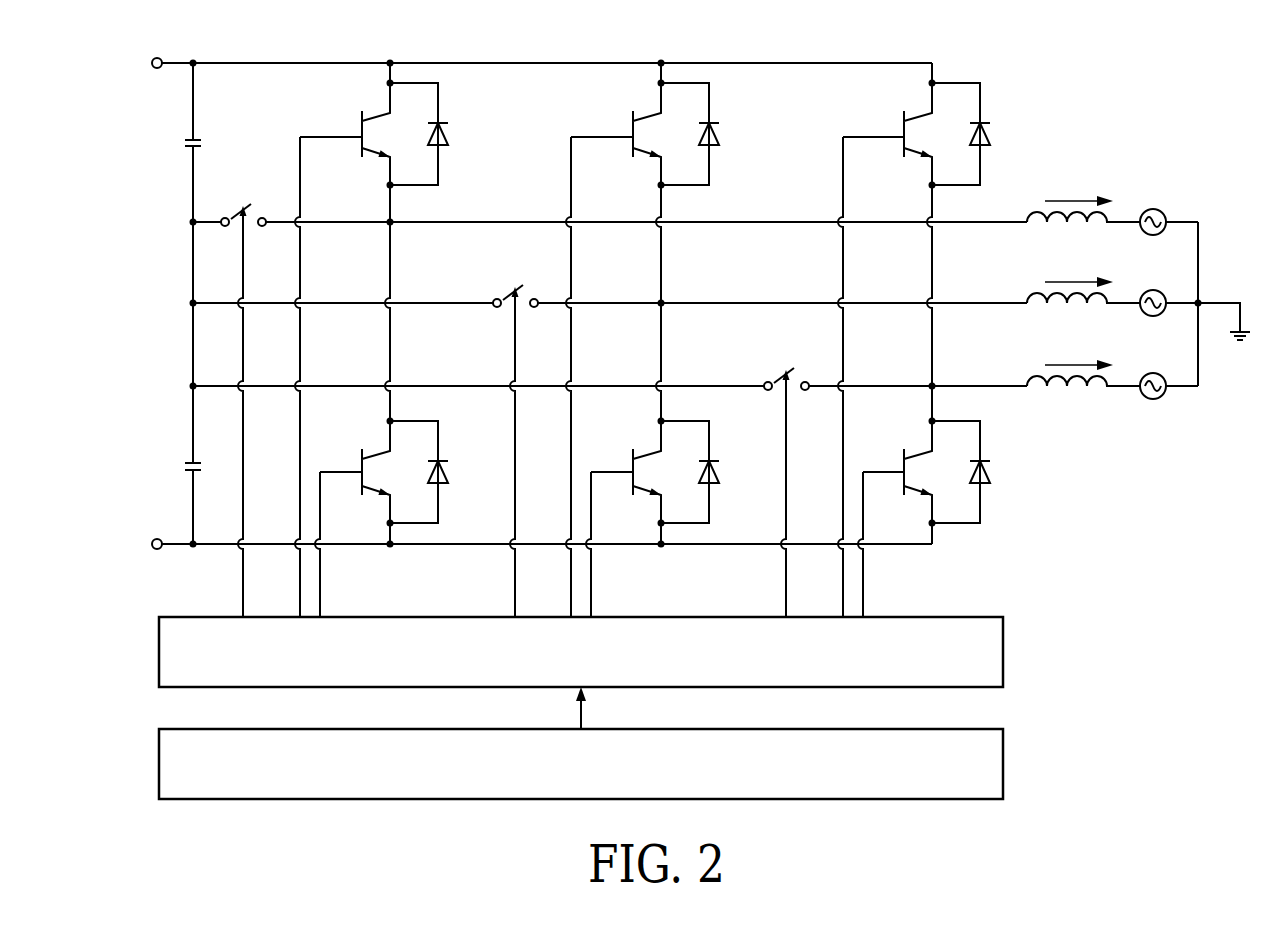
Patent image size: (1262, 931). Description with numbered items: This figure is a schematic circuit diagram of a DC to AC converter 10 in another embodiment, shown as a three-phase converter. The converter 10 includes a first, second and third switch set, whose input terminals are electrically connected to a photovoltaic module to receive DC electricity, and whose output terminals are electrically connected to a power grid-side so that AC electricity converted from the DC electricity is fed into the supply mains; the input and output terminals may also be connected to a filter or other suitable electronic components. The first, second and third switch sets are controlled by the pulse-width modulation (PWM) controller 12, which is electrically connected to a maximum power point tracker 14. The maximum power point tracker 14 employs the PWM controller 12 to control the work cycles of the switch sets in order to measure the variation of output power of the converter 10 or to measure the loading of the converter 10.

The converter 10 is at (58, 67).
The pulse-width modulation (PWM) controller 12 is at (1003, 652).
The maximum power point tracker 14 is at (1003, 766).